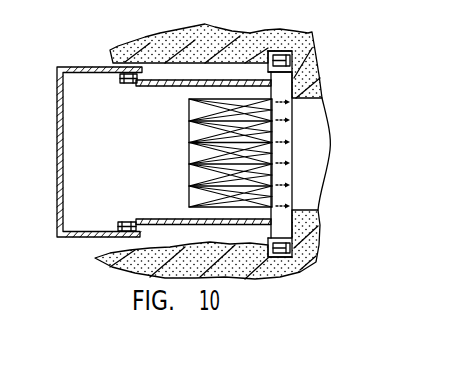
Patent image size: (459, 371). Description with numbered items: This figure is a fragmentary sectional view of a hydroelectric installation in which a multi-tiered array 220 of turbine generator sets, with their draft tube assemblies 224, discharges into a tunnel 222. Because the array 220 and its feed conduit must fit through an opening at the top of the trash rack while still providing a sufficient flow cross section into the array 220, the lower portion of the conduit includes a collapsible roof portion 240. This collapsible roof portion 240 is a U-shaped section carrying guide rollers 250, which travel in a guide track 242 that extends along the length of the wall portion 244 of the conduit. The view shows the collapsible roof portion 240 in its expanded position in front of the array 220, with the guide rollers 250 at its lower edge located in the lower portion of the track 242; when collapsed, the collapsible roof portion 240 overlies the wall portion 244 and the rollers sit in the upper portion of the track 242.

The multi-tiered array of turbine generator sets 220 is at (179, 157).
The tunnel 222 is at (297, 100).
The draft tube assemblies 224 is at (197, 153).
The collapsible roof portion 240 is at (76, 67).
The guide track 242 is at (122, 77).
The wall portion 244 is at (193, 80).
The guide rollers 250 is at (128, 72).